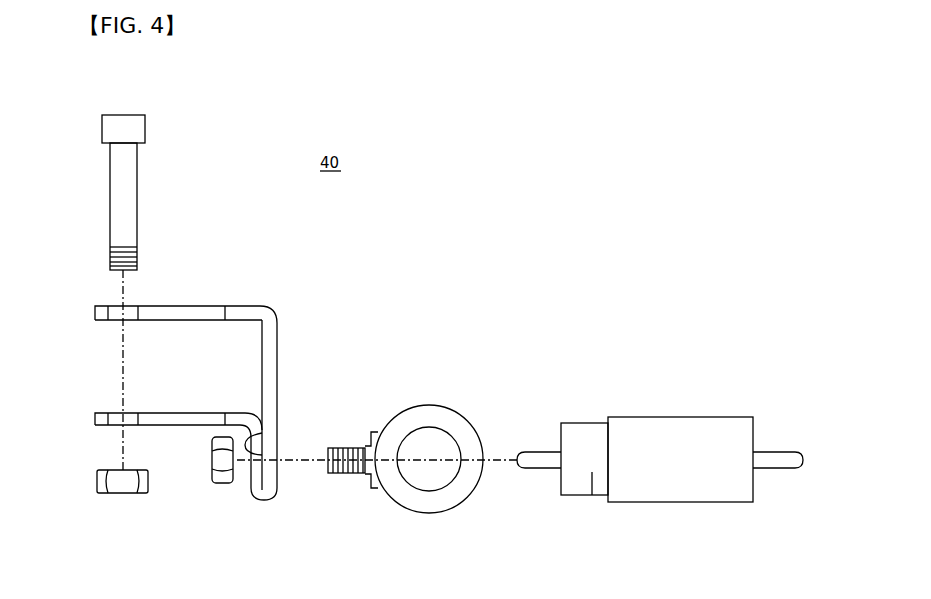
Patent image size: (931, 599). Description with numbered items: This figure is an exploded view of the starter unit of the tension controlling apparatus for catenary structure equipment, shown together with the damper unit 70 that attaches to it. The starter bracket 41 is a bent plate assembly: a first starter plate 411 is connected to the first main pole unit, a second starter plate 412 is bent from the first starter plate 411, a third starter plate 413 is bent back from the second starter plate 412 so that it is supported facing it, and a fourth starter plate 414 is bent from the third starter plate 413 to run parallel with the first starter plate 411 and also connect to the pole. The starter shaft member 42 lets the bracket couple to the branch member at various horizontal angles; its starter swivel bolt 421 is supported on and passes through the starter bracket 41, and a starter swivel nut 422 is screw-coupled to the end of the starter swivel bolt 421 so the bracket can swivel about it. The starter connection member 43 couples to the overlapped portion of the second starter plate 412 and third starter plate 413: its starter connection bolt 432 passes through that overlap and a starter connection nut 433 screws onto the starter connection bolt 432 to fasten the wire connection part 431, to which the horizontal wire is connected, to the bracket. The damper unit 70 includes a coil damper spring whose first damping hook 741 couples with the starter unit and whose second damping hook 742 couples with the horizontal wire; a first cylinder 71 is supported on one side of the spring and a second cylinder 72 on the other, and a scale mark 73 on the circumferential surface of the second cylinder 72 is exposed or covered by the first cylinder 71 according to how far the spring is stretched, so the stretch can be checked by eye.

The starter bracket 41 is at (214, 367).
The first starter plate 411 is at (196, 305).
The second starter plate 412 is at (277, 370).
The third starter plate 413 is at (262, 440).
The fourth starter plate 414 is at (178, 428).
The starter shaft member 42 is at (87, 176).
The starter swivel bolt 421 is at (118, 186).
The starter swivel nut 422 is at (97, 481).
The starter connection member 43 is at (405, 453).
The wire connection part 431 is at (437, 514).
The starter connection bolt 432 is at (350, 475).
The starter connection nut 433 is at (227, 484).
The damper unit 70 is at (660, 442).
The first cylinder 71 is at (716, 437).
The second cylinder 72 is at (587, 433).
The scale mark 73 is at (592, 483).
The first damping hook 741 is at (540, 469).
The second damping hook 742 is at (773, 469).